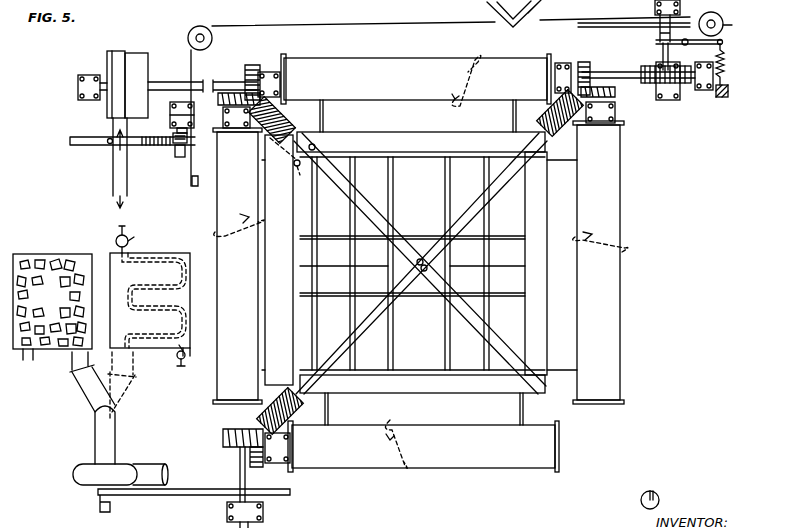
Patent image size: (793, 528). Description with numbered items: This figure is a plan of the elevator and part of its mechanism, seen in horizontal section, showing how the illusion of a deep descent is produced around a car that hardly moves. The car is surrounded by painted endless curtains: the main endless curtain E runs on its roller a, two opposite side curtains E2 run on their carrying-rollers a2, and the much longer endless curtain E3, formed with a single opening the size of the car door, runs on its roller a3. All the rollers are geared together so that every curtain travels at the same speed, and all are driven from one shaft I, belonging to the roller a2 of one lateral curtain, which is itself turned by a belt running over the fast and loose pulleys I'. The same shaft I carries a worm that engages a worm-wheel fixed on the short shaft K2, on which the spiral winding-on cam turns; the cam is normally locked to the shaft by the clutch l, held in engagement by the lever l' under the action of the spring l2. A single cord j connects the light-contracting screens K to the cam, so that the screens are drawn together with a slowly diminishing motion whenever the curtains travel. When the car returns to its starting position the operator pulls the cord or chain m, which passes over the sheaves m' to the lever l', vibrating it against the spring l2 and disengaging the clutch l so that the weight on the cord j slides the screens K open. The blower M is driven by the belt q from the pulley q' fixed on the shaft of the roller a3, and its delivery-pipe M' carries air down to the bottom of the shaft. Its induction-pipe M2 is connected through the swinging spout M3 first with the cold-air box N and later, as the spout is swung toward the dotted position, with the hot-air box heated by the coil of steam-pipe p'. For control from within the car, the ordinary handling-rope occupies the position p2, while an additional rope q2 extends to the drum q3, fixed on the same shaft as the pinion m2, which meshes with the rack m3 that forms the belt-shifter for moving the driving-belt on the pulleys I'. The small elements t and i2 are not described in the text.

The cord or chain m is at (440, 93).
The sheaves m' is at (460, 98).
The pulleys I' is at (113, 121).
The shaft I is at (202, 78).
The rack m3 is at (132, 149).
The pinion m2 is at (188, 139).
The drum q3 is at (194, 118).
The screens K is at (649, 7).
The clutch l is at (651, 42).
The lever l' is at (689, 52).
The spring l2 is at (728, 71).
The cord j is at (650, 84).
The short shaft K2 is at (672, 100).
The carrying-rollers a2 is at (420, 263).
The roller a3 is at (239, 266).
The roller a is at (587, 262).
The endless curtain E is at (404, 105).
The endless curtain E3 is at (277, 260).
The side curtains E2 is at (454, 412).
The handling-rope p2 is at (321, 145).
The additional rope q2 is at (287, 164).
The pulley q' is at (263, 458).
The belt q is at (194, 503).
The blower M is at (93, 474).
The delivery-pipe M' is at (162, 470).
The induction-pipe M2 is at (100, 441).
The swinging spout M3 is at (86, 401).
The cold-air box N is at (101, 298).
The steam valve t is at (121, 233).
The coil of steam-pipe p' is at (170, 356).
The indicator i2 is at (657, 494).